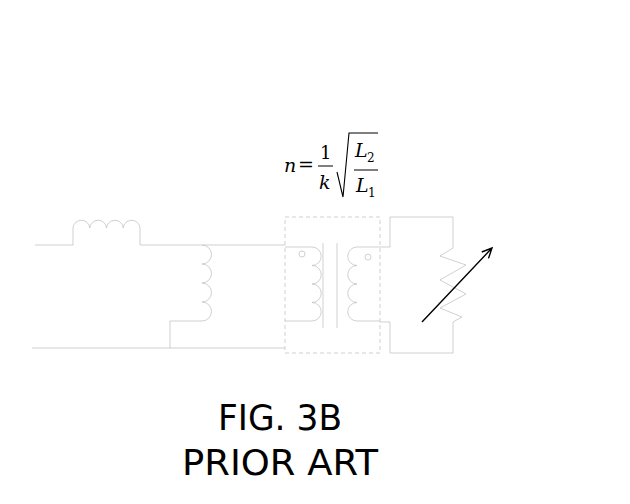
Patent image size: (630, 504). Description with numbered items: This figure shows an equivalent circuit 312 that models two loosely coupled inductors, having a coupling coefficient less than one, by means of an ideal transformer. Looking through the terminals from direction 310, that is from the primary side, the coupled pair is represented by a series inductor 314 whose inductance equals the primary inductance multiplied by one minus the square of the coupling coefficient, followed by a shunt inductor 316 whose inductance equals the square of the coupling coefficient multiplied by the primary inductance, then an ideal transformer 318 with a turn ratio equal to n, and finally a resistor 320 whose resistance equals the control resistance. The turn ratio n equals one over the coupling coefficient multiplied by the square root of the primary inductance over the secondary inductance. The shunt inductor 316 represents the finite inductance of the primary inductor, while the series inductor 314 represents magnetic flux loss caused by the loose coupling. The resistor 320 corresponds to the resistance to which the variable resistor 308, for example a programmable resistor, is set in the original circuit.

The variable resistor 308 is at (11, 401).
The direction 310 is at (55, 292).
The equivalent circuit 312 is at (516, 130).
The series inductor 314 is at (138, 221).
The shunt inductor 316 is at (210, 302).
The ideal transformer 318 is at (327, 353).
The resistor 320 is at (462, 318).